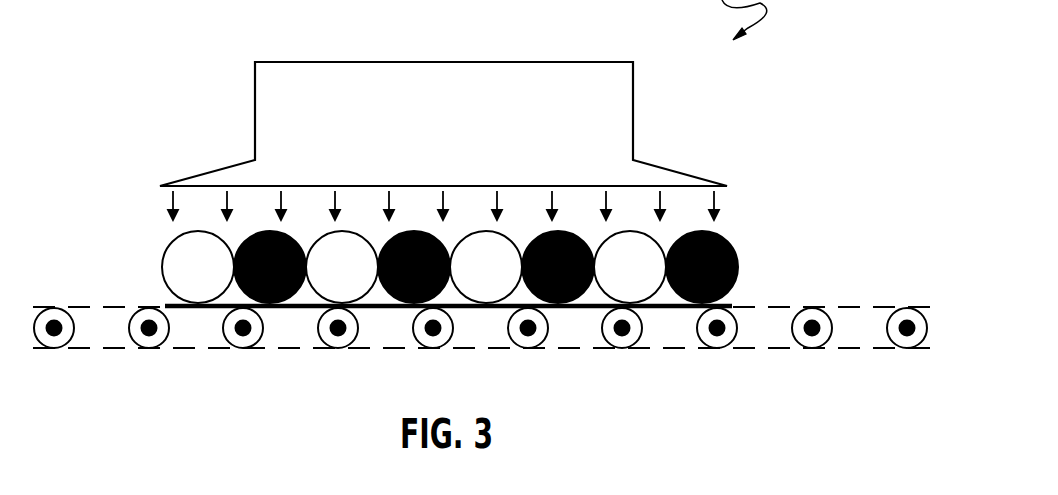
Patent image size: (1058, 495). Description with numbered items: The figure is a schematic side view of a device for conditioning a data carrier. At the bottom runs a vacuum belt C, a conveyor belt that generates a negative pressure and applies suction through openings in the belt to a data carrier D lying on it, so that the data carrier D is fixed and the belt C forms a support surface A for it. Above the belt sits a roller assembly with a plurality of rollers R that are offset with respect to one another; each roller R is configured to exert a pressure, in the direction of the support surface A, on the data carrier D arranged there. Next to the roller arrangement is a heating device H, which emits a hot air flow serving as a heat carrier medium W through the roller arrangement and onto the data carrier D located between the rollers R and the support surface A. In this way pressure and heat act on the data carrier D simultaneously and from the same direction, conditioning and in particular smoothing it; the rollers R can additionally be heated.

The heating device H is at (435, 137).
The heat carrier medium W is at (730, 208).
The rollers R is at (450, 267).
The data carrier D is at (735, 305).
The support surface A is at (131, 305).
The vacuum belt C is at (82, 349).